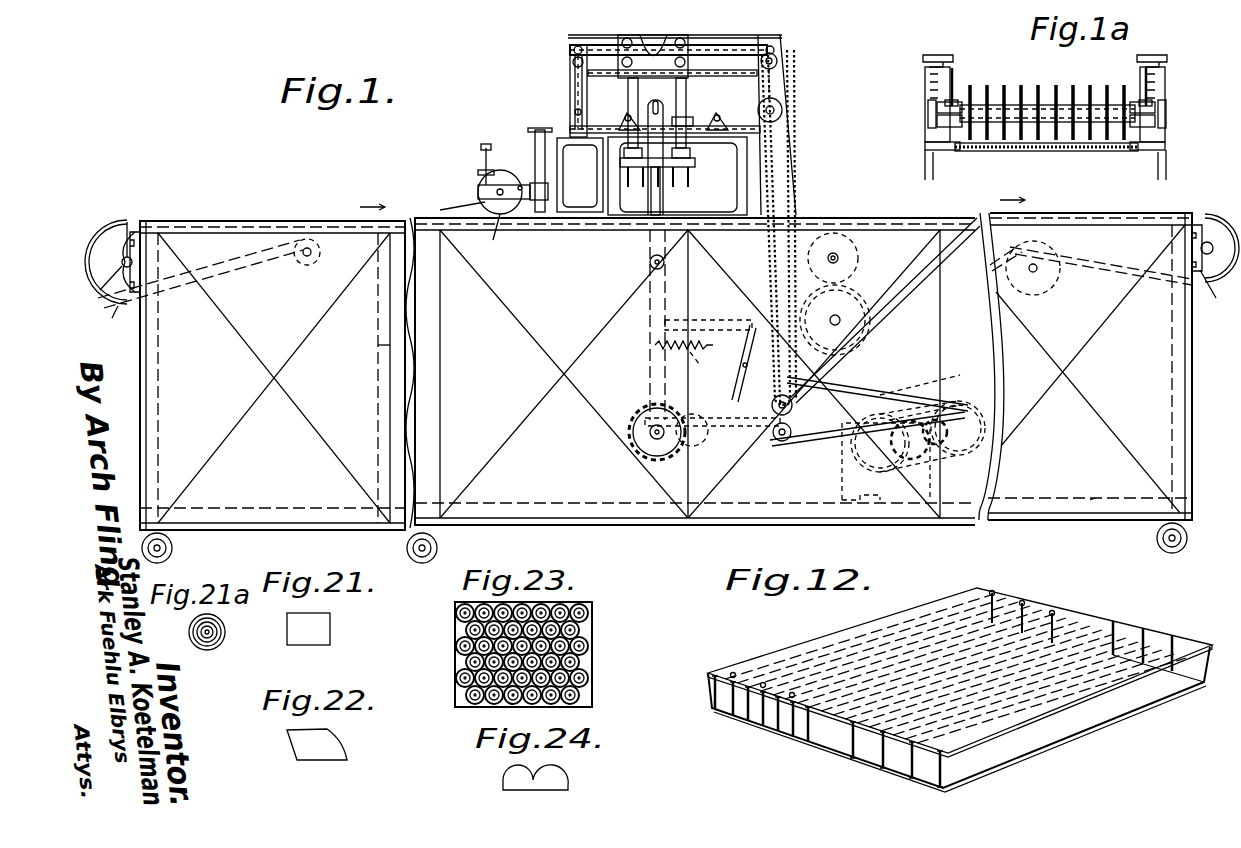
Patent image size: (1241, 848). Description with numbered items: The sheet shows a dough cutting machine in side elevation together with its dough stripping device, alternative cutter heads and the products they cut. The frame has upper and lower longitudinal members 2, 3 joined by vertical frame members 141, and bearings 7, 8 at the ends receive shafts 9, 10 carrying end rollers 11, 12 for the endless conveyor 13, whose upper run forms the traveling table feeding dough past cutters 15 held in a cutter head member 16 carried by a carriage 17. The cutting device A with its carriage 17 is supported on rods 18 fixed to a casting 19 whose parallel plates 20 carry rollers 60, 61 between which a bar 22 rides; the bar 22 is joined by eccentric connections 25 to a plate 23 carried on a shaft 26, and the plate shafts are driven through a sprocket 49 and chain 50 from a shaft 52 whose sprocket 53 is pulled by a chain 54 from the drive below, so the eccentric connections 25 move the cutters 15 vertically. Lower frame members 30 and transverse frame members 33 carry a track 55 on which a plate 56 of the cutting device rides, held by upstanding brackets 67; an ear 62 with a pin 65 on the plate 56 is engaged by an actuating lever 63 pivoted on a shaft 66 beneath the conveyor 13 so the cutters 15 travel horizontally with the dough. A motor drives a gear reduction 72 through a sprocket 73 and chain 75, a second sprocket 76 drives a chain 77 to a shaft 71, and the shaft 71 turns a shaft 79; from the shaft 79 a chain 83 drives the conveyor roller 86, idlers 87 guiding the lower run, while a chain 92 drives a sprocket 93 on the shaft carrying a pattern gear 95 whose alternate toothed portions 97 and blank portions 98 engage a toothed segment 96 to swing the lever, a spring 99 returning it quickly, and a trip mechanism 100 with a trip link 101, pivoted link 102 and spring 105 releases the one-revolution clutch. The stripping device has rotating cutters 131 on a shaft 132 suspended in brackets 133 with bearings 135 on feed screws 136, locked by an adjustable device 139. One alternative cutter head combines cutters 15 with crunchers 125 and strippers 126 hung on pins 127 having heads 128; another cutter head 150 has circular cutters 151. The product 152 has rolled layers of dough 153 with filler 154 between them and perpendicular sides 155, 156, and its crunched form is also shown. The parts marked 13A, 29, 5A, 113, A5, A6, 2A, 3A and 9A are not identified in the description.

In FIG. 1, the upper longitudinal frame member 2 is at (1108, 218).
In FIG. 1a, the upper longitudinal frame member 2 is at (925, 170).
In FIG. 1, the lower longitudinal frame member 3 is at (1092, 498).
In FIG. 1, the bearing 7 is at (108, 319).
In FIG. 1, the bearing 8 is at (1211, 294).
In FIG. 1, the shaft 9 is at (108, 290).
In FIG. 1, the shaft 10 is at (1215, 218).
In FIG. 1, the end roller 11 is at (125, 240).
In FIG. 1, the end roller 12 is at (1203, 222).
In FIG. 1, the endless conveyor 13 is at (135, 225).
In FIG. 1a, the endless conveyor 13 is at (1038, 151).
In FIG. 1, the housing 13A is at (652, 176).
In FIG. 1a, the housing 13A is at (928, 128).
In FIG. 1, the cutter 15 is at (683, 180).
In FIG. 12, the cutter 15 is at (718, 712).
In FIG. 12, the cutter head member 16 is at (862, 632).
In FIG. 1, the carriage 17 is at (745, 160).
In FIG. 1, the rod 18 is at (638, 92).
In FIG. 1, the casting 19 is at (650, 40).
In FIG. 1, the parallel plate 20 is at (908, 395).
In FIG. 1, the bar 22 is at (745, 46).
In FIG. 1, the plate 23 is at (568, 55).
In FIG. 1, the eccentric connection 25 is at (575, 45).
In FIG. 1, the shaft 26 is at (568, 72).
In FIG. 1, the bearing 29 is at (783, 60).
In FIG. 1, the lower frame member 30 is at (760, 165).
In FIG. 1, the transverse frame member 33 is at (795, 80).
In FIG. 1, the sprocket 49 is at (777, 64).
In FIG. 1, the chain 50 is at (780, 82).
In FIG. 1, the shaft 52 is at (780, 104).
In FIG. 1, the sprocket 53 is at (782, 110).
In FIG. 1, the chain 54 is at (782, 405).
In FIG. 1, the track 55 is at (782, 128).
In FIG. 1, the plate 56 is at (690, 117).
In FIG. 1, the chain 5A is at (790, 195).
In FIG. 1, the roller 60 is at (675, 33).
In FIG. 1, the roller 61 is at (688, 40).
In FIG. 1, the ear 62 is at (663, 115).
In FIG. 1, the actuating lever 63 is at (662, 203).
In FIG. 1, the pin 65 is at (661, 100).
In FIG. 1, the shaft 66 is at (648, 262).
In FIG. 1, the upstanding bracket 67 is at (620, 120).
In FIG. 1, the shaft 71 is at (845, 404).
In FIG. 1, the gear reduction 72 is at (805, 430).
In FIG. 1, the sprocket 73 is at (935, 400).
In FIG. 1, the chain 75 is at (935, 480).
In FIG. 1, the second sprocket 76 is at (960, 421).
In FIG. 1, the chain 77 is at (942, 380).
In FIG. 1, the shaft 79 is at (786, 442).
In FIG. 1, the chain 83 is at (858, 360).
In FIG. 1, the conveyor roller 86 is at (844, 315).
In FIG. 1, the idler 87 is at (315, 265).
In FIG. 1, the chain 92 is at (712, 440).
In FIG. 1, the sprocket 93 is at (688, 430).
In FIG. 1, the pattern gear 95 is at (628, 430).
In FIG. 1, the toothed segment 96 is at (675, 382).
In FIG. 1, the toothed portion 97 is at (640, 412).
In FIG. 1, the blank portion 98 is at (680, 415).
In FIG. 1, the spring 99 is at (709, 363).
In FIG. 1, the trip mechanism 100 is at (680, 296).
In FIG. 1, the trip link 101 is at (680, 312).
In FIG. 1, the pivoted link 102 is at (738, 382).
In FIG. 1, the spring 105 is at (665, 320).
In FIG. 12, the side rail 113 is at (712, 670).
In FIG. 12, the cruncher 125 is at (880, 775).
In FIG. 12, the stripper 126 is at (790, 740).
In FIG. 12, the pin 127 is at (795, 694).
In FIG. 12, the head 128 is at (1000, 595).
In FIG. 1, the rotating cutter 131 is at (478, 190).
In FIG. 1, the shaft 132 is at (501, 185).
In FIG. 1, the bracket 133 is at (454, 207).
In FIG. 1a, the bracket 133 is at (925, 150).
In FIG. 1, the vertical bearing 135 is at (505, 180).
In FIG. 1a, the vertical bearing 135 is at (937, 108).
In FIG. 1, the feed screw 136 is at (502, 147).
In FIG. 1a, the feed screw 136 is at (925, 78).
In FIG. 1, the adjustable device 139 is at (481, 150).
In FIG. 1a, the adjustable device 139 is at (955, 72).
In FIG. 1, the vertical frame member 141 is at (361, 345).
In FIG. 23, the cutter head 150 is at (592, 606).
In FIG. 23, the circular cutter 151 is at (592, 650).
In FIG. 21a, the product 152 is at (192, 622).
In FIG. 21, the product 152 is at (287, 616).
In FIG. 24, the product 152 is at (502, 772).
In FIG. 1a, the layer of dough 153 is at (1040, 85).
In FIG. 21a, the layer of dough 153 is at (207, 650).
In FIG. 21a, the filler 154 is at (192, 640).
In FIG. 21, the vertical side 155 is at (287, 640).
In FIG. 21, the vertical side 156 is at (338, 636).
In FIG. 1, the cutting device A is at (150, 395).
In FIG. 1, the rail A5 is at (720, 40).
In FIG. 1, the bearing A6 is at (568, 62).
In FIG. 1, the bracket 2A is at (785, 50).
In FIG. 1, the post 3A is at (570, 98).
In FIG. 1, the pawl 9A is at (628, 455).